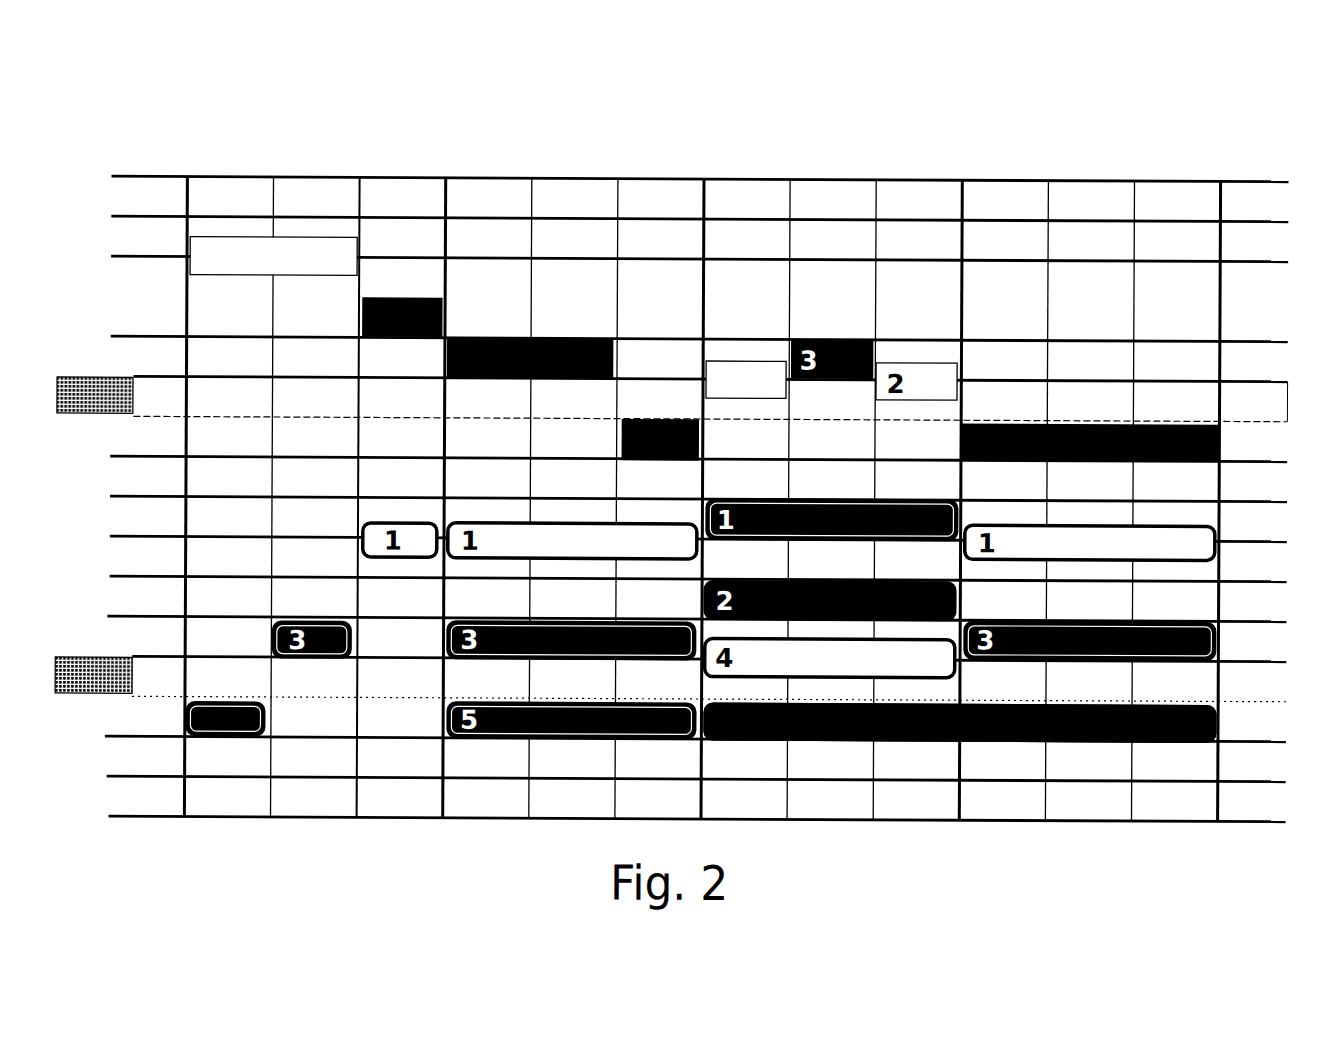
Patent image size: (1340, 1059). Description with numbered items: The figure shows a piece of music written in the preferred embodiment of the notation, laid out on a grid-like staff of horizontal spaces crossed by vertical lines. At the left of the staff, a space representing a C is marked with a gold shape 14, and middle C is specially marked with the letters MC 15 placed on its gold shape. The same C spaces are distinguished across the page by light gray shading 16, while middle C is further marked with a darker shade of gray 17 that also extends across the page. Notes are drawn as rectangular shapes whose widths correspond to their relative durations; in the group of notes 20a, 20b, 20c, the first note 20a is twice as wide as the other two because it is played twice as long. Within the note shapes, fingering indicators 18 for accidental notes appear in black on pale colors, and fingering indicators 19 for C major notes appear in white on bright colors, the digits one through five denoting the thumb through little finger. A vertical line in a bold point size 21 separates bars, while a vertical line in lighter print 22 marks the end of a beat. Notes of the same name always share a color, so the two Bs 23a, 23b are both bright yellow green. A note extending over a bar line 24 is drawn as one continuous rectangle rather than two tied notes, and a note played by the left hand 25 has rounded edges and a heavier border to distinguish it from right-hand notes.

The gold shape 14 is at (72, 643).
The letters MC 15 is at (78, 363).
The light gray shading 16 is at (148, 646).
The darker shade of gray 17 is at (152, 366).
The fingering indicators for accidental notes 18 is at (224, 227).
The fingering indicators for C major notes 19 is at (398, 288).
The note 20a is at (502, 321).
The note 20b is at (646, 405).
The note 20c is at (734, 343).
The vertical line in a bold point size 21 is at (961, 162).
The vertical line in lighter print 22 is at (1045, 162).
The note B 23a is at (1240, 440).
The note B 23b is at (1236, 720).
The note extending over a bar line 24 is at (936, 759).
The note played by the left hand 25 is at (224, 756).